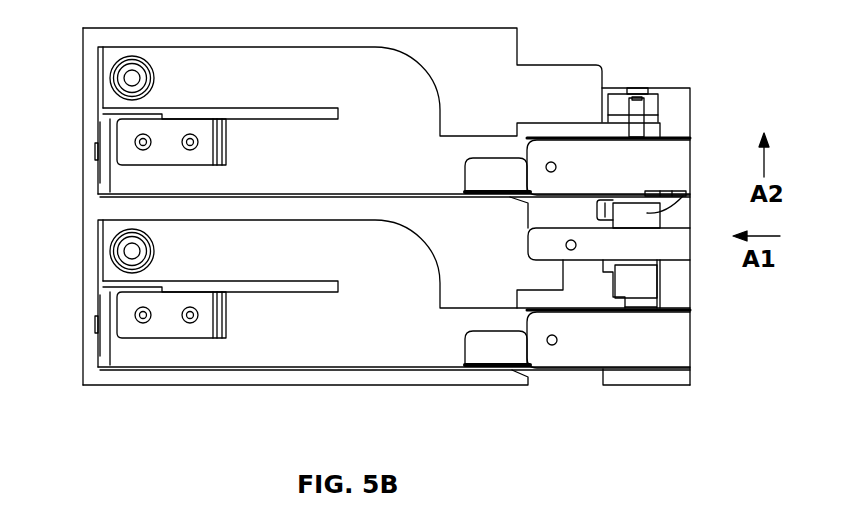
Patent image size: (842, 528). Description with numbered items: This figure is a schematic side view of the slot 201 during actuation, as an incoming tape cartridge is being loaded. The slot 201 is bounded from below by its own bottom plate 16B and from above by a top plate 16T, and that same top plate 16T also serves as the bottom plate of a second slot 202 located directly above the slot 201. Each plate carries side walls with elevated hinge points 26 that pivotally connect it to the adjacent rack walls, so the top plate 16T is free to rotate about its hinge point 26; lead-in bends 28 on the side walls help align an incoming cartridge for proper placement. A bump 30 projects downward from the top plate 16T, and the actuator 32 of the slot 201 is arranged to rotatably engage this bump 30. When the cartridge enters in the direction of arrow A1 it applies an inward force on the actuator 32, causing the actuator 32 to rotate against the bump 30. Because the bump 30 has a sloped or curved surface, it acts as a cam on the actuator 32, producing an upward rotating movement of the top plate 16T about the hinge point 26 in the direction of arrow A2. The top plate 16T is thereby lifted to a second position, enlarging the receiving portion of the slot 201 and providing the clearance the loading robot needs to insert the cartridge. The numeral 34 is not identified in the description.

The top plate 16T is at (641, 109).
The bottom plate 16B is at (585, 368).
The hinge point 26 is at (130, 79).
The lead-in bend 28 is at (663, 150).
The bump 30 is at (610, 198).
The actuator 32 is at (689, 194).
The screw 34 is at (637, 126).
The slot 201 is at (510, 298).
The second slot 202 is at (535, 80).